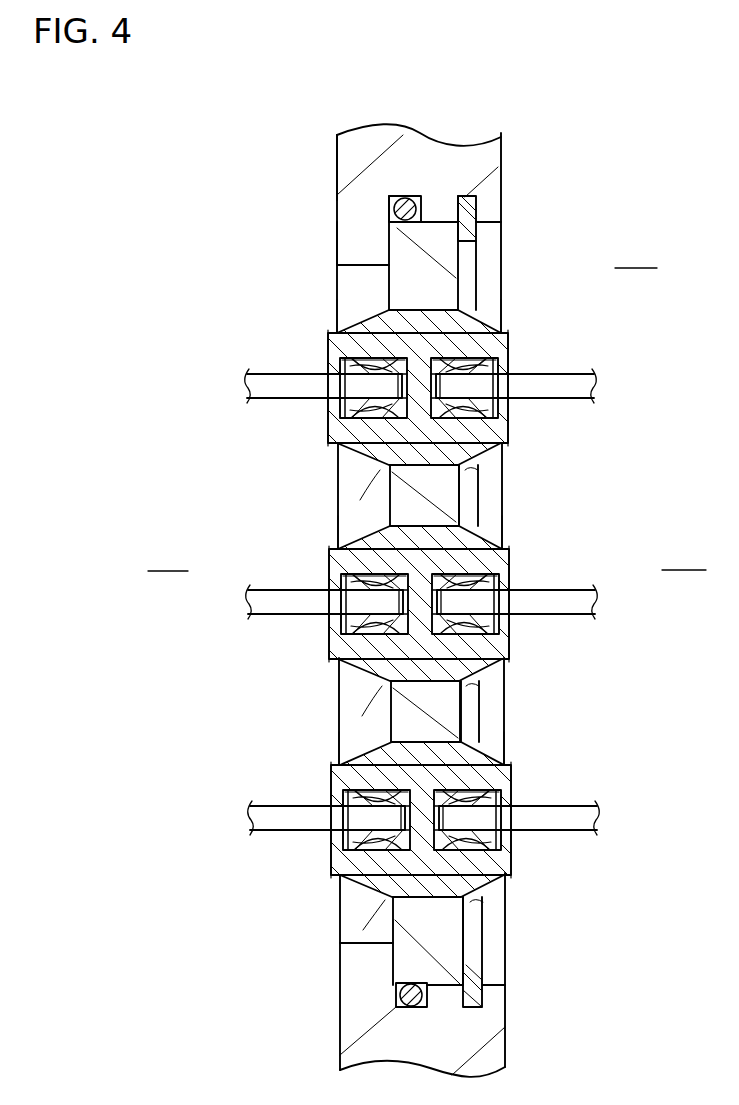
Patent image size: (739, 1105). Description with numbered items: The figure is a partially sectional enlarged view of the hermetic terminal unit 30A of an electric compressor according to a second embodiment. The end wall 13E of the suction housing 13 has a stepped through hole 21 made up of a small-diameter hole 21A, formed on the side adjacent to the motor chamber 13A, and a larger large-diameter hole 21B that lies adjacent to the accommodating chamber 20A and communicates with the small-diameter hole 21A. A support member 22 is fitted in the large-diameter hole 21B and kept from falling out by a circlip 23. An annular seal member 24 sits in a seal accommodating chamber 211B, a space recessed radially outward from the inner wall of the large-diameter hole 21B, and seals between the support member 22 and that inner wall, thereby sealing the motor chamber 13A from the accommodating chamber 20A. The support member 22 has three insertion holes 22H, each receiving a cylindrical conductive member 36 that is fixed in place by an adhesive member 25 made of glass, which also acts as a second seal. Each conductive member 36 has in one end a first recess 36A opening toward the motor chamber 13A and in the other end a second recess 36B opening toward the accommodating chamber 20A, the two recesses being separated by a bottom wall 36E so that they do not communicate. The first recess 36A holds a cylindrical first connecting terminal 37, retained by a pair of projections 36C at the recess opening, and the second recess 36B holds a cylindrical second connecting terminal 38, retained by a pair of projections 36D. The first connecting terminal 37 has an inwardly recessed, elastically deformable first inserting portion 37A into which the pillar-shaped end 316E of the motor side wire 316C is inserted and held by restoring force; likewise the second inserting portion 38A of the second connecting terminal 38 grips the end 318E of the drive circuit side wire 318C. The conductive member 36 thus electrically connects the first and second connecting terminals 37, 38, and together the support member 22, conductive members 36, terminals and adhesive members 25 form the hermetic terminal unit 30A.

The suction housing 13 is at (501, 148).
The end wall 13E is at (337, 162).
The motor chamber 13A is at (166, 559).
The accommodating chamber 20A is at (684, 558).
The through hole 21 is at (470, 86).
The small-diameter hole 21A is at (351, 268).
The large-diameter hole 21B is at (441, 158).
The seal accommodating chamber 211B is at (441, 231).
The circlip 23 is at (481, 208).
The support member 22 is at (440, 988).
The insertion hole 22H is at (482, 465).
The seal member 24 is at (392, 992).
The adhesive member 25 is at (366, 703).
The hermetic terminal unit 30A is at (616, 289).
The conductive member 36 is at (425, 308).
The first recess 36A is at (329, 436).
The second recess 36B is at (508, 436).
The projections 36C is at (338, 367).
The projections 36D is at (500, 367).
The bottom wall 36E is at (422, 470).
The first connecting terminal 37 is at (338, 356).
The second connecting terminal 38 is at (500, 356).
The first inserting portion 37A is at (334, 342).
The second inserting portion 38A is at (505, 342).
The motor side wire 316C is at (246, 391).
The drive circuit side wire 318C is at (594, 391).
The end of motor side wire 316E is at (332, 322).
The end of drive circuit side wire 318E is at (506, 322).